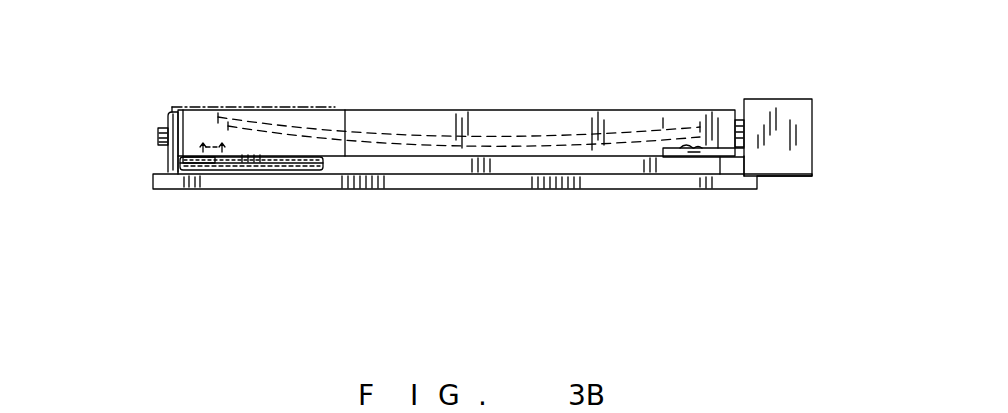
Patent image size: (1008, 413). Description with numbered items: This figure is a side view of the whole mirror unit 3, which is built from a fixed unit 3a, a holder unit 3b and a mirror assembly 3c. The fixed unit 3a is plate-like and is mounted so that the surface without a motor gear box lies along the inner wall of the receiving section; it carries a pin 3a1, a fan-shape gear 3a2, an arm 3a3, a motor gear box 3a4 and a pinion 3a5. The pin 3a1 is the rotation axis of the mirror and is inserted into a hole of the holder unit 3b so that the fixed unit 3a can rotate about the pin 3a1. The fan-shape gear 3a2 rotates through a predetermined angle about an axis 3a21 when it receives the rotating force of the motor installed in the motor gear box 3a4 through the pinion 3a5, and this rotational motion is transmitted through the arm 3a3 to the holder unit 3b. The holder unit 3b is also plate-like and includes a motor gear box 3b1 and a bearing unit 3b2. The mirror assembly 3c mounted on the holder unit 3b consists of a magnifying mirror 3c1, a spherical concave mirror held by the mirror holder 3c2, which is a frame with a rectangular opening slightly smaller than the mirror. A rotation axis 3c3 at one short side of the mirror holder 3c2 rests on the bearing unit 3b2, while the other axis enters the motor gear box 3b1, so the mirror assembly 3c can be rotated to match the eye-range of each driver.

The mirror unit 3 is at (460, 178).
The fixed unit 3a is at (737, 190).
The pin 3a1 is at (678, 157).
The fan-shape gear 3a2 is at (317, 172).
The axis 3a21 is at (256, 174).
The arm 3a3 is at (183, 173).
The motor gear box 3a4 is at (279, 107).
The pinion 3a5 is at (210, 165).
The holder unit 3b is at (460, 126).
The motor gear box 3b1 is at (776, 99).
The bearing unit 3b2 is at (162, 143).
The mirror assembly 3c is at (419, 99).
The magnifying mirror 3c1 is at (508, 140).
The mirror holder 3c2 is at (718, 112).
The rotation axis 3c3 is at (163, 127).